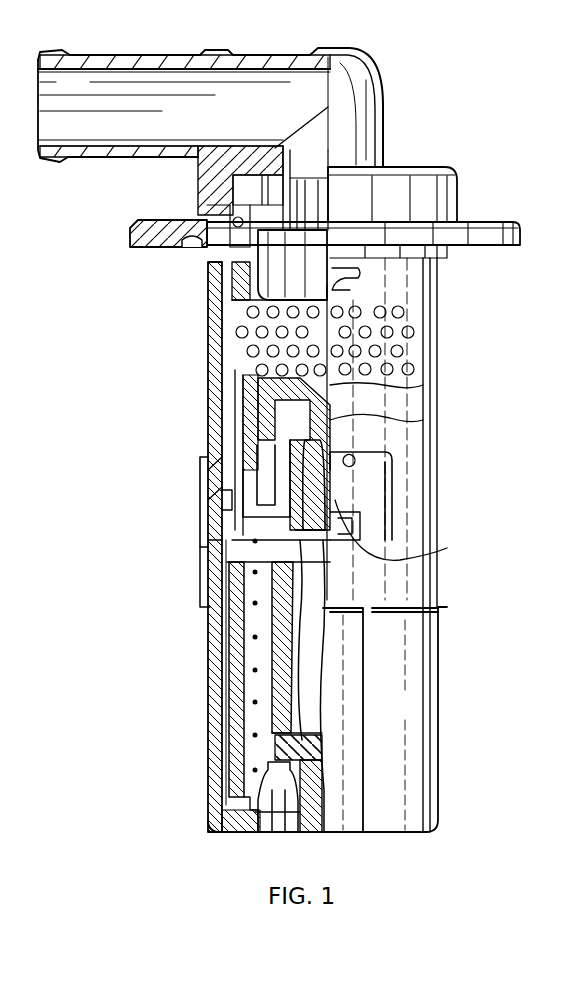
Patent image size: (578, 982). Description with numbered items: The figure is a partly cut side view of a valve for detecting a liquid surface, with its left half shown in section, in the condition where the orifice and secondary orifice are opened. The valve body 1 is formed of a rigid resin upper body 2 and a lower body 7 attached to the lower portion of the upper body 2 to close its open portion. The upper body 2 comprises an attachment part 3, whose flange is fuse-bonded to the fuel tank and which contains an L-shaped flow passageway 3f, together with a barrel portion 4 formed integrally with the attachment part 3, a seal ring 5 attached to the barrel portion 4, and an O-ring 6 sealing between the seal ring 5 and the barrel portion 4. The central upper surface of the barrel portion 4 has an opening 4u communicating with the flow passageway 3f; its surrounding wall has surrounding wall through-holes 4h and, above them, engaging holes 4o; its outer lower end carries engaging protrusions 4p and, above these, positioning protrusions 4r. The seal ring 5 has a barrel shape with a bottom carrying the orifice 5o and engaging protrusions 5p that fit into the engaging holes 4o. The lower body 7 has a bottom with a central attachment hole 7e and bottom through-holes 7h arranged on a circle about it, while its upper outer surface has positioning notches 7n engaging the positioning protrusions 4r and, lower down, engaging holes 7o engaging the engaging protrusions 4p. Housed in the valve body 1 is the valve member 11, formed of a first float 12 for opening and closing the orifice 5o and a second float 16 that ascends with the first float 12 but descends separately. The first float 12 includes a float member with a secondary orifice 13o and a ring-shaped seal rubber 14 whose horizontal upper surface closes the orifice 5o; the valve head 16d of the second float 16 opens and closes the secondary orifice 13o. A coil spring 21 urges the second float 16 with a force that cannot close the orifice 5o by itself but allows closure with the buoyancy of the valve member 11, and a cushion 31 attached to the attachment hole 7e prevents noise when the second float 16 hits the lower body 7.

The valve body 1 is at (379, 77).
The upper body 2 is at (523, 222).
The attachment part 3 is at (445, 185).
The flow passageway 3f is at (136, 88).
The barrel portion 4 is at (425, 372).
The opening 4u is at (318, 200).
The engaging holes 4o is at (340, 284).
The surrounding wall through-holes 4h is at (405, 328).
The positioning protrusions 4r is at (208, 468).
The engaging protrusions 4p is at (232, 503).
The seal ring 5 is at (262, 302).
The engaging protrusions 5p is at (252, 283).
The orifice 5o is at (312, 324).
The O-ring 6 is at (226, 233).
The lower body 7 is at (430, 592).
The engaging holes 7o is at (212, 500).
The positioning notches 7n is at (335, 472).
The bottom through-holes 7h is at (243, 826).
The attachment hole 7e is at (328, 830).
The valve member 11 is at (300, 390).
The first float 12 is at (285, 423).
The secondary orifice 13o is at (423, 385).
The seal rubber 14 is at (262, 355).
The second float 16 is at (235, 602).
The valve head 16d is at (423, 420).
The coil spring 21 is at (262, 670).
The cushion 31 is at (301, 832).